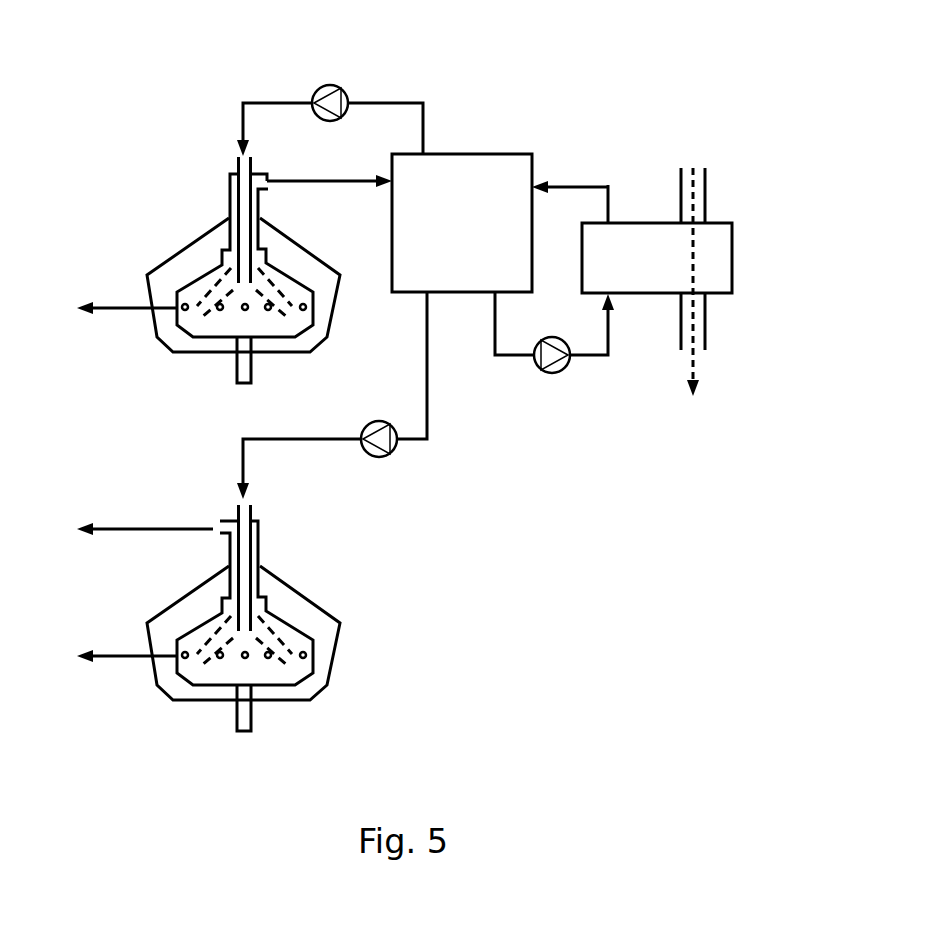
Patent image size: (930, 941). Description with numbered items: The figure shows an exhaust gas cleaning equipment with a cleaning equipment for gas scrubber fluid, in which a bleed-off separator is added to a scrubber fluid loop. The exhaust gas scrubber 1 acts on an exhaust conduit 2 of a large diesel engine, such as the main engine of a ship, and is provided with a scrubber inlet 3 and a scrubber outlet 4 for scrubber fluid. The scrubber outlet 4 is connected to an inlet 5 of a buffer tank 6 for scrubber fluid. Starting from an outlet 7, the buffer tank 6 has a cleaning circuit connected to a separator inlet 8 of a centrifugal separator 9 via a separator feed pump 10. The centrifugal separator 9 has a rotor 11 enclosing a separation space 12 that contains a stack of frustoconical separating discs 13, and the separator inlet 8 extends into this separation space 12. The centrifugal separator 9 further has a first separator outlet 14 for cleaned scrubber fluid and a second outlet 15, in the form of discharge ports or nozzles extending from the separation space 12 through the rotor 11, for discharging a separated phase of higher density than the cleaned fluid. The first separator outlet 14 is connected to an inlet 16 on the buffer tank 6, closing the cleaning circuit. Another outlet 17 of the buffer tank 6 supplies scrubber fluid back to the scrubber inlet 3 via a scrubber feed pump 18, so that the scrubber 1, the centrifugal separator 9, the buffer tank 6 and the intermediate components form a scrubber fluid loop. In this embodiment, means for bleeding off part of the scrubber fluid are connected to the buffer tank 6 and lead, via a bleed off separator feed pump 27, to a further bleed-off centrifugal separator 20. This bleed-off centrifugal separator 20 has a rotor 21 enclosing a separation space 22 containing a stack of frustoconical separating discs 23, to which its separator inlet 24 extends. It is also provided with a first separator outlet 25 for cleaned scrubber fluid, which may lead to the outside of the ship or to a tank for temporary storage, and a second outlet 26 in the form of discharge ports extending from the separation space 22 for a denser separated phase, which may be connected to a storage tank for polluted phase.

The exhaust gas scrubber 1 is at (657, 258).
The exhaust conduit 2 is at (692, 164).
The scrubber inlet 3 is at (620, 297).
The scrubber outlet 4 is at (618, 220).
The inlet of buffer tank 5 is at (545, 182).
The buffer tank 6 is at (462, 223).
The outlet 7 is at (434, 150).
The separator inlet 8 is at (240, 152).
The centrifugal separator 9 is at (165, 232).
The separator feed pump 10 is at (330, 83).
The rotor 11 is at (293, 338).
The separation space 12 is at (222, 300).
The frustoconical separating discs 13 is at (225, 265).
The first separator outlet 14 is at (275, 188).
The second outlet 15 is at (120, 318).
The inlet on buffer tank 16 is at (367, 193).
The outlet 17 is at (483, 297).
The scrubber feed pump 18 is at (549, 375).
The bleed-off centrifugal separator 20 is at (338, 682).
The rotor 21 is at (293, 688).
The separation space 22 is at (222, 648).
The frustoconical separating discs 23 is at (225, 612).
The separator inlet 24 is at (240, 500).
The first separator outlet 25 is at (213, 522).
The second outlet 26 is at (125, 668).
The bleed off separator feed pump 27 is at (378, 420).